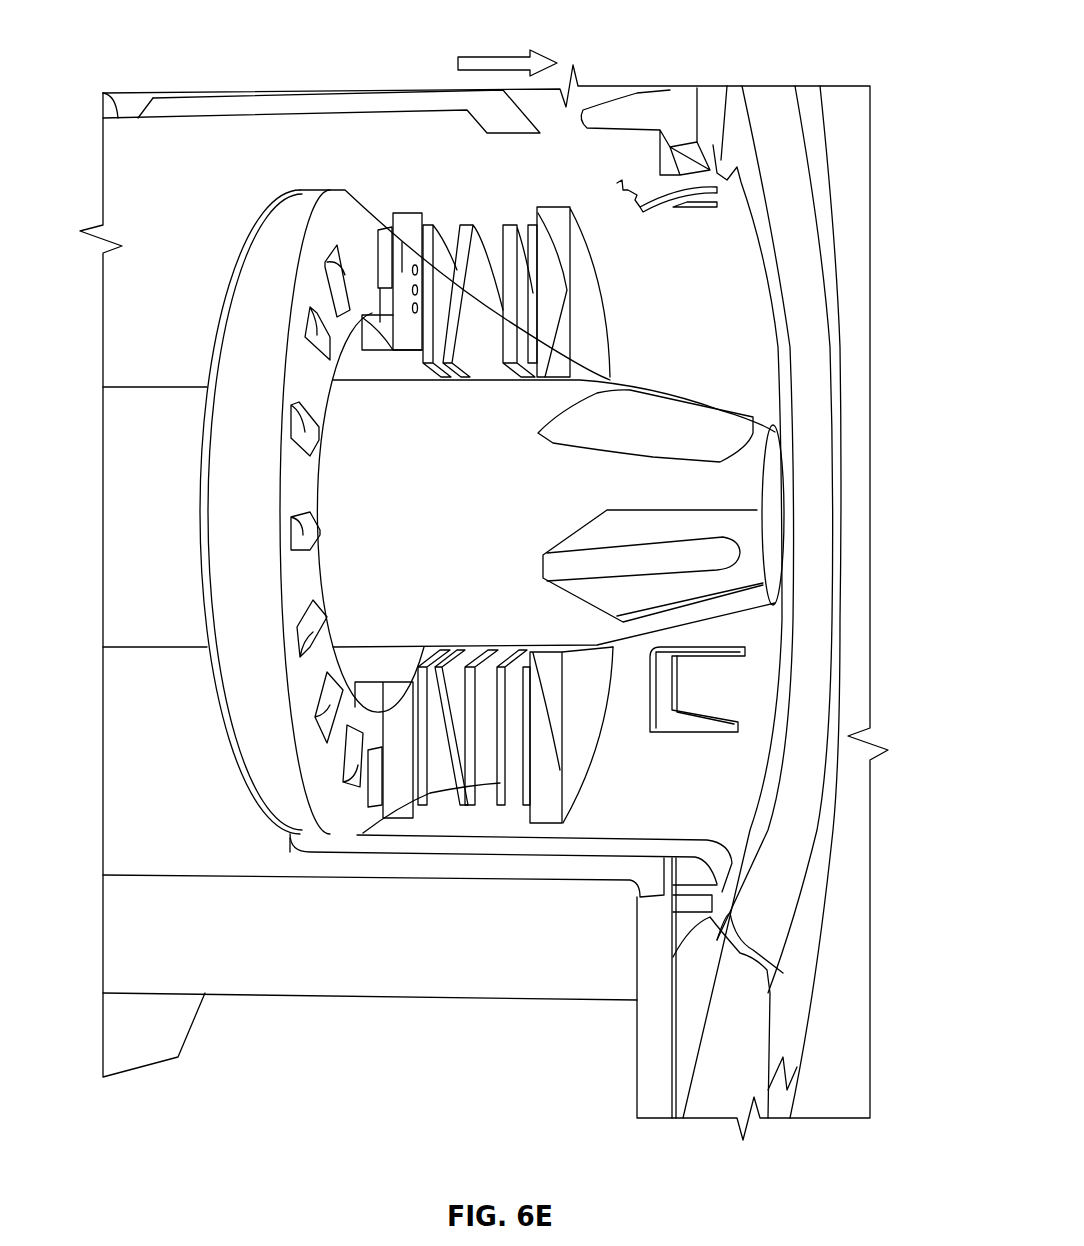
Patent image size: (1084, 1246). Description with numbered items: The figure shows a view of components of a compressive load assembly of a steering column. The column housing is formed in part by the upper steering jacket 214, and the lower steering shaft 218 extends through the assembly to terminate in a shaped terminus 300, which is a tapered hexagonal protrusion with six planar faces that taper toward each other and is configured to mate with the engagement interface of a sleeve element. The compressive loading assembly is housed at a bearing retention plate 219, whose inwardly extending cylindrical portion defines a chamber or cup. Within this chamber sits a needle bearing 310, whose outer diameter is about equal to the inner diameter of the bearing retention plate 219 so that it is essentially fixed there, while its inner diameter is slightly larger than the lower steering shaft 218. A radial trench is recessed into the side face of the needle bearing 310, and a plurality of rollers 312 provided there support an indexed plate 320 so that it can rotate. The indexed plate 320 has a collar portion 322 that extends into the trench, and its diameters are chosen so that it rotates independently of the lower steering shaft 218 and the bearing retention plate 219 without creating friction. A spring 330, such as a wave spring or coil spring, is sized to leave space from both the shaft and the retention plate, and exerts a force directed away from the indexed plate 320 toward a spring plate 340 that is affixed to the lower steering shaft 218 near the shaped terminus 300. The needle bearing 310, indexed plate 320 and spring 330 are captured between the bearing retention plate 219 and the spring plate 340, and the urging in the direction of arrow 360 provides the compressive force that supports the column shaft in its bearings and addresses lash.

The upper steering jacket 214 is at (283, 952).
The lower steering shaft 218 is at (130, 607).
The bearing retention plate 219 is at (748, 957).
The shaped terminus 300 is at (660, 430).
The needle bearing 310 is at (277, 250).
The rollers 312 is at (297, 423).
The indexed plate 320 is at (427, 250).
The collar portion 322 is at (367, 250).
The spring 330 is at (462, 805).
The spring plate 340 is at (552, 787).
The arrow 360 is at (515, 52).